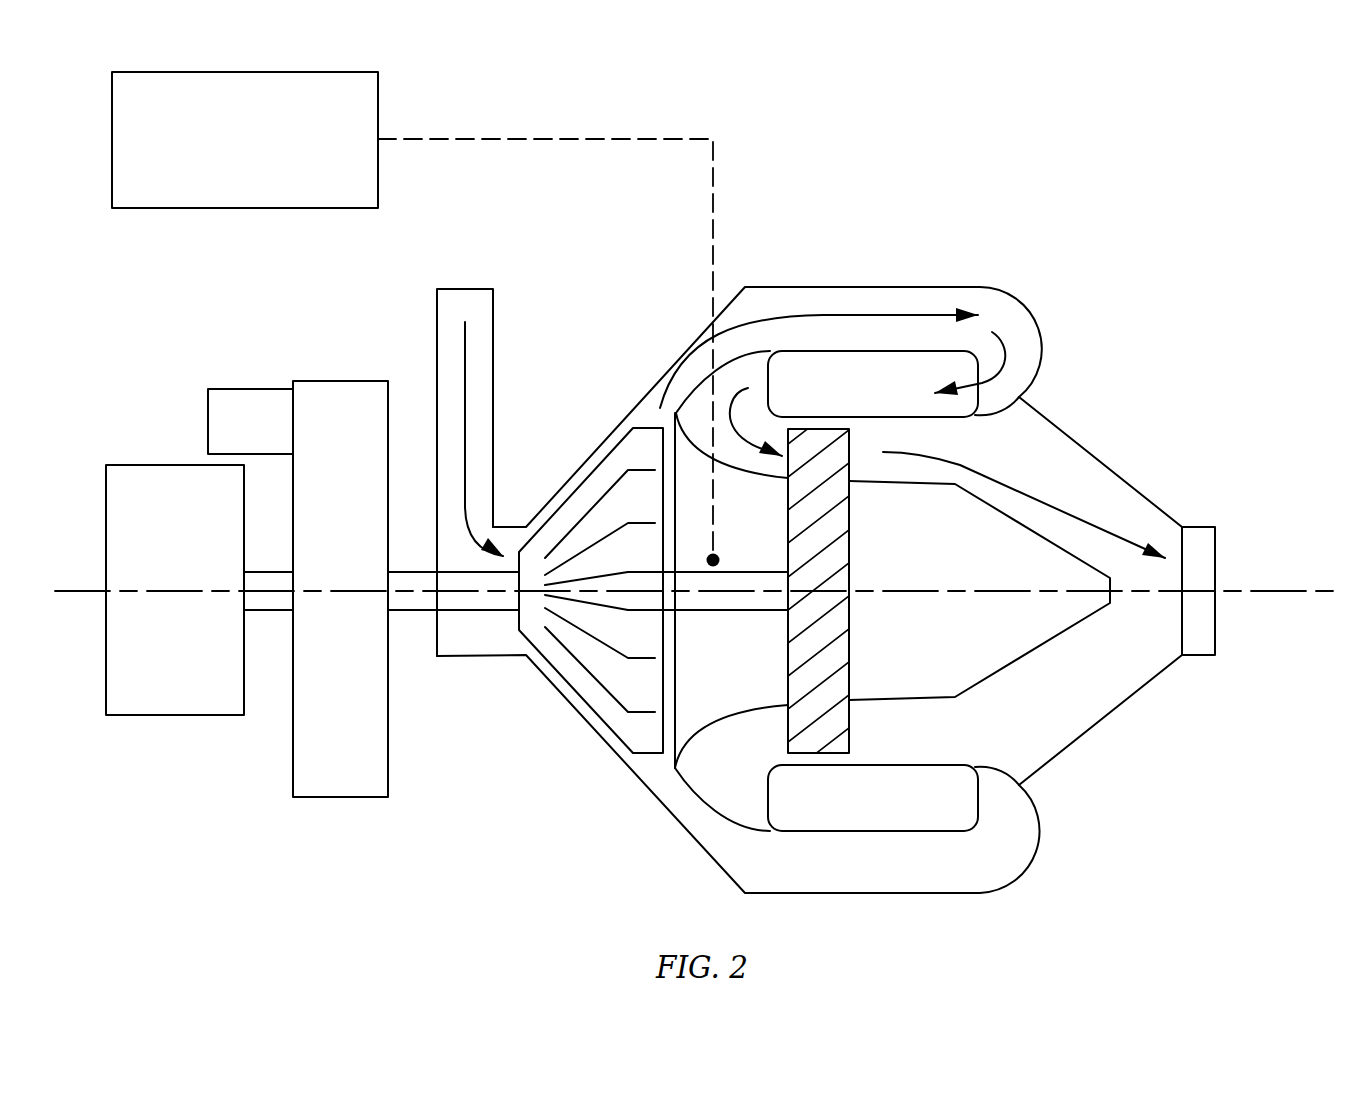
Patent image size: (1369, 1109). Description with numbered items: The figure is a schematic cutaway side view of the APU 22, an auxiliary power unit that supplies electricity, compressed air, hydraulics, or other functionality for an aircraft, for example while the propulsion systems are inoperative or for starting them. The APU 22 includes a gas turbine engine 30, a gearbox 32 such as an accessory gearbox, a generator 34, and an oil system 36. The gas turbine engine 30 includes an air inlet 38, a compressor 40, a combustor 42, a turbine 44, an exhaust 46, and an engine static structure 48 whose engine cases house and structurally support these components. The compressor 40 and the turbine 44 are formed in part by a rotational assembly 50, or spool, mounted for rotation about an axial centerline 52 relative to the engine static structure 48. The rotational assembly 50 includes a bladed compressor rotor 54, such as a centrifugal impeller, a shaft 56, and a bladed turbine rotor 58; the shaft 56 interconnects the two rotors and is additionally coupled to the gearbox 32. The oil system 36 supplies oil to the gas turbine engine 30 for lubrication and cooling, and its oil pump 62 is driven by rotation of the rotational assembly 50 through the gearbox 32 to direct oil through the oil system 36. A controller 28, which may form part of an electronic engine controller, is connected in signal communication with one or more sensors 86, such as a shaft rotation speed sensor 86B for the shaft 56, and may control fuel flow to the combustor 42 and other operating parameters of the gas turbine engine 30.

The APU 22 is at (1130, 203).
The controller 28 is at (231, 170).
The gas turbine engine 30 is at (1110, 418).
The gearbox 32 is at (326, 517).
The generator 34 is at (160, 558).
The oil system 36 is at (356, 429).
The air inlet 38 is at (463, 289).
The compressor 40 is at (591, 577).
The combustor 42 is at (878, 843).
The turbine 44 is at (774, 731).
The exhaust 46 is at (1215, 637).
The engine static structure 48 is at (1008, 293).
The rotational assembly 50 is at (496, 632).
The axial centerline 52 is at (1323, 587).
The bladed compressor rotor 54 is at (637, 453).
The shaft 56 is at (712, 612).
The bladed turbine rotor 58 is at (850, 641).
The oil pump 62 is at (228, 389).
The sensors 86 is at (828, 547).
The shaft rotation speed sensor 86B is at (713, 560).